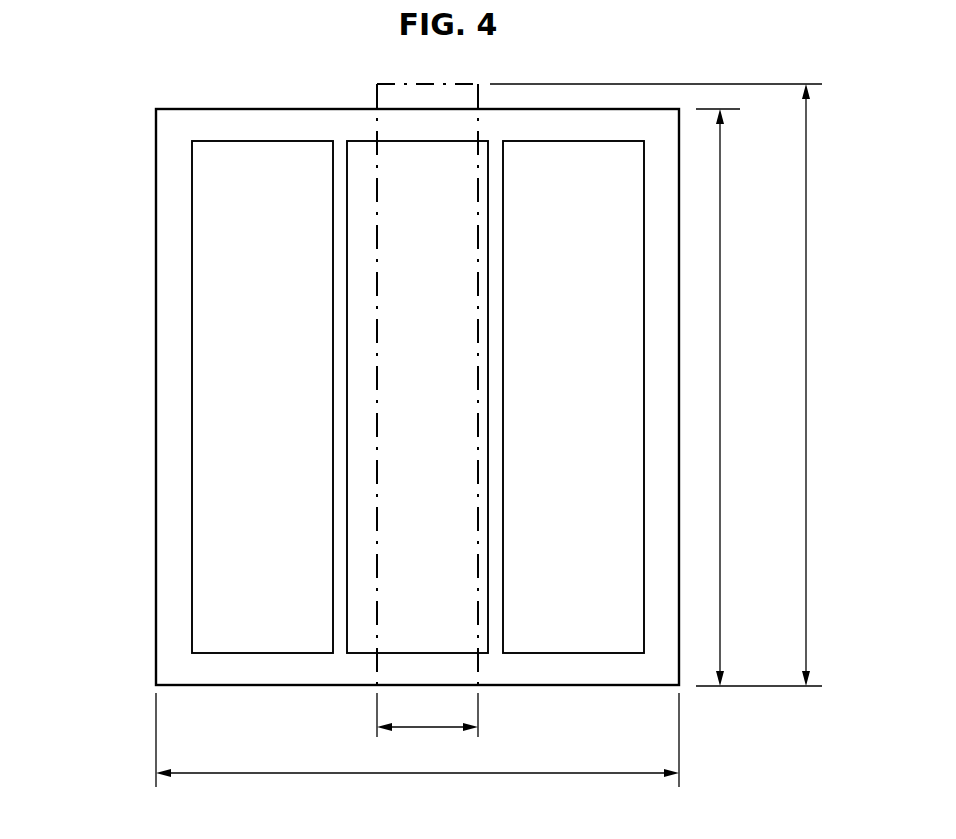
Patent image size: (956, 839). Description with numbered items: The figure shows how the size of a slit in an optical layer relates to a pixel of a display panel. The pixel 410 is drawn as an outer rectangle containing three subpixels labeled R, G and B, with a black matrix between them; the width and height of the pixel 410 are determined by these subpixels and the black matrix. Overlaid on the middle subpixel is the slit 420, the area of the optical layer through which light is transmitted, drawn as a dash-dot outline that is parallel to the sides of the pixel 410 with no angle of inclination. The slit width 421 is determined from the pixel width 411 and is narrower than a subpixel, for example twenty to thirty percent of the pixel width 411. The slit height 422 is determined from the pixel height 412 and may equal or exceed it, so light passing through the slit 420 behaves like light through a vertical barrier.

The pixel 410 is at (156, 399).
The slit 420 is at (377, 271).
The pixel width 411 is at (417, 749).
The pixel height 412 is at (759, 397).
The slit width 421 is at (427, 725).
The slit height 422 is at (672, 385).